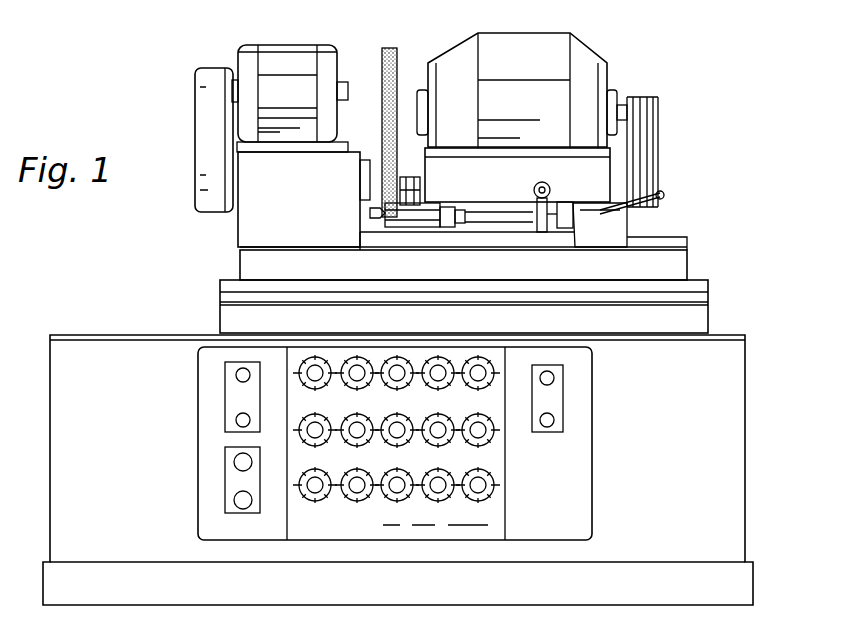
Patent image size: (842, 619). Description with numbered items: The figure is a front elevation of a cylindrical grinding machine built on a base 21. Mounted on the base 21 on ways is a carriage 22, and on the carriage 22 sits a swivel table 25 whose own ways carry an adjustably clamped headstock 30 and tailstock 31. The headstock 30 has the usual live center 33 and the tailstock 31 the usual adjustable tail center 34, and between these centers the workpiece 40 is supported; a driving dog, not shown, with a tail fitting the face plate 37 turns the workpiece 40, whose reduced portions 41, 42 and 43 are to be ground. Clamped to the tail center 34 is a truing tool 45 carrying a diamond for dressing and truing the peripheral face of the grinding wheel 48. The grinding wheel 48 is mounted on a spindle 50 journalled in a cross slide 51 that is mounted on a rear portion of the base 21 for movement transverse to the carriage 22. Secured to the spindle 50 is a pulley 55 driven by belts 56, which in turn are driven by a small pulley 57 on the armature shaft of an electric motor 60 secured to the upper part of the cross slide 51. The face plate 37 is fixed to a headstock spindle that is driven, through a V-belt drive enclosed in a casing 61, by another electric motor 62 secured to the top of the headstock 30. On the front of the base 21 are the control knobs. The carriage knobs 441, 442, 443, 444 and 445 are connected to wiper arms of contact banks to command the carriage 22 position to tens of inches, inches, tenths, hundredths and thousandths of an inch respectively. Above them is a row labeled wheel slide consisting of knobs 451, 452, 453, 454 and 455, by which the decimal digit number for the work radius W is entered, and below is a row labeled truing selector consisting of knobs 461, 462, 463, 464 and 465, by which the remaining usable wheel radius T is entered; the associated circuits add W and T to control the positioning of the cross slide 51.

The base 21 is at (58, 508).
The carriage 22 is at (220, 318).
The swivel table 25 is at (245, 267).
The headstock 30 is at (250, 227).
The tailstock 31 is at (605, 240).
The live center 33 is at (370, 212).
The tail center 34 is at (530, 230).
The face plate 37 is at (364, 164).
The workpiece 40 is at (415, 228).
The reduced portion 41 is at (448, 207).
The reduced portion 42 is at (461, 209).
The reduced portion 43 is at (496, 212).
The truing tool 45 is at (550, 188).
The grinding wheel 48 is at (381, 70).
The spindle 50 is at (416, 192).
The cross slide 51 is at (540, 165).
The pulley 55 is at (663, 181).
The belts 56 is at (656, 143).
The small pulley 57 is at (660, 100).
The electric motor 60 is at (585, 57).
The casing 61 is at (203, 165).
The electric motor 62 is at (289, 53).
The knob 441 is at (302, 426).
The knob 442 is at (346, 421).
The knob 443 is at (402, 442).
The knob 444 is at (446, 425).
The knob 445 is at (483, 438).
The knob 451 is at (315, 357).
The knob 452 is at (359, 357).
The knob 453 is at (399, 357).
The knob 454 is at (441, 357).
The knob 455 is at (481, 357).
The knob 461 is at (302, 500).
The knob 462 is at (345, 492).
The knob 463 is at (389, 497).
The knob 464 is at (443, 480).
The knob 465 is at (486, 495).